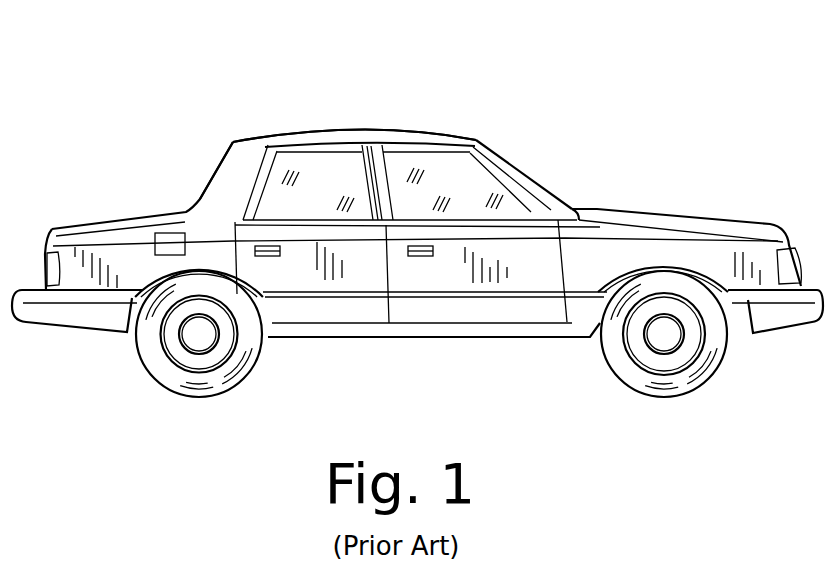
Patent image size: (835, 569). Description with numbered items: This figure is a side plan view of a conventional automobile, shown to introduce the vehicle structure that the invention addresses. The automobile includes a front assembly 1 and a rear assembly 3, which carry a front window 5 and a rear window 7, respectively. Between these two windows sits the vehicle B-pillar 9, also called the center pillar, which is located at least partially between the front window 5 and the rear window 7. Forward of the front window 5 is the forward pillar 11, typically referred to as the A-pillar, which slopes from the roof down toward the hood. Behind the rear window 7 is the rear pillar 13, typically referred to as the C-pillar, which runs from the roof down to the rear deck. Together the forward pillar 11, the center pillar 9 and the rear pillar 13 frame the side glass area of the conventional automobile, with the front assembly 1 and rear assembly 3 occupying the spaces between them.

The front assembly 1 is at (417, 206).
The rear assembly 3 is at (292, 165).
The front window 5 is at (433, 167).
The rear window 7 is at (327, 170).
The B-pillar 9 is at (380, 128).
The forward pillar 11 is at (522, 183).
The rear pillar 13 is at (242, 180).